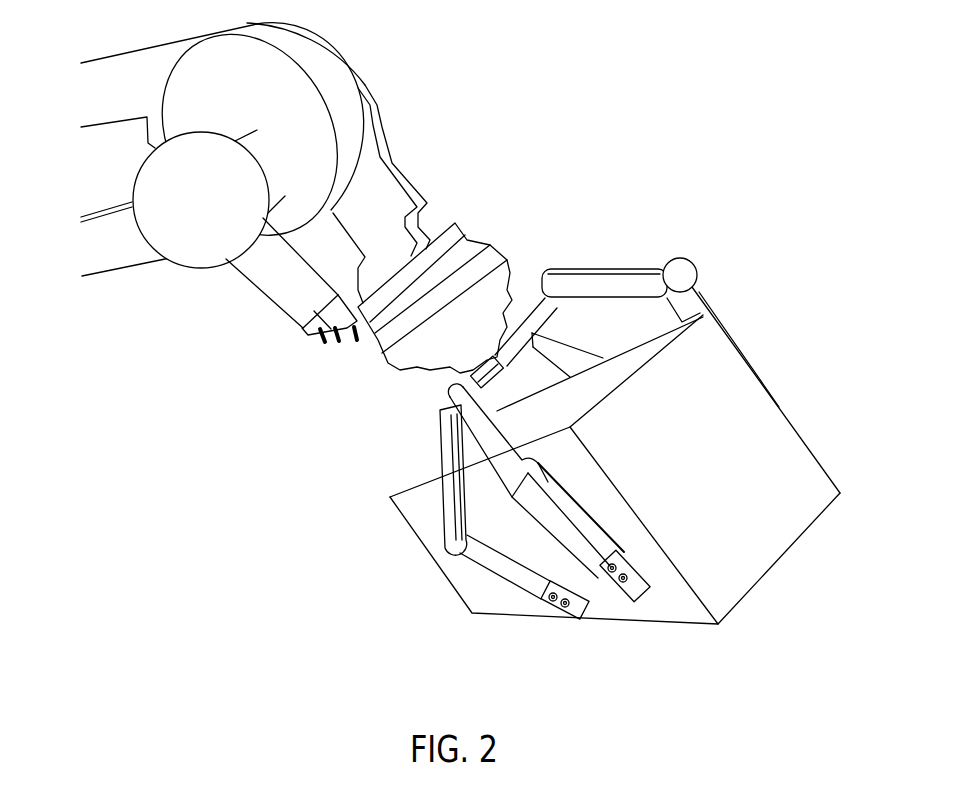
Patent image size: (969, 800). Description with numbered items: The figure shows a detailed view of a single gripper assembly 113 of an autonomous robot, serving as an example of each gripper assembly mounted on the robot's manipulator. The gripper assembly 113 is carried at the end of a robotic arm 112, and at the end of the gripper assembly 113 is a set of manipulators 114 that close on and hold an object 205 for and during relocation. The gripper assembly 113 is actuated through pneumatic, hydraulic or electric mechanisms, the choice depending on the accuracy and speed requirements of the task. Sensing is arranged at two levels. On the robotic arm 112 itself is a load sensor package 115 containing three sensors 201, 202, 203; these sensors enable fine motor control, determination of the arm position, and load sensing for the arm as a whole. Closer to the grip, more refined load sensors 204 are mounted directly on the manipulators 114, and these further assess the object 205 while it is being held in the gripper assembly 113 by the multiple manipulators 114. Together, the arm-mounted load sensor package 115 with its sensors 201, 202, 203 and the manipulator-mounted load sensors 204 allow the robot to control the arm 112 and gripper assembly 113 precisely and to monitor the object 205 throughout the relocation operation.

The robotic arm 112 is at (130, 272).
The gripper assembly 113 is at (586, 113).
The manipulators 114 is at (647, 268).
The load sensor package 115 is at (243, 272).
The sensor 201 is at (322, 340).
The sensor 202 is at (338, 337).
The sensor 203 is at (357, 333).
The load sensor 204 is at (543, 593).
The object 205 is at (798, 435).